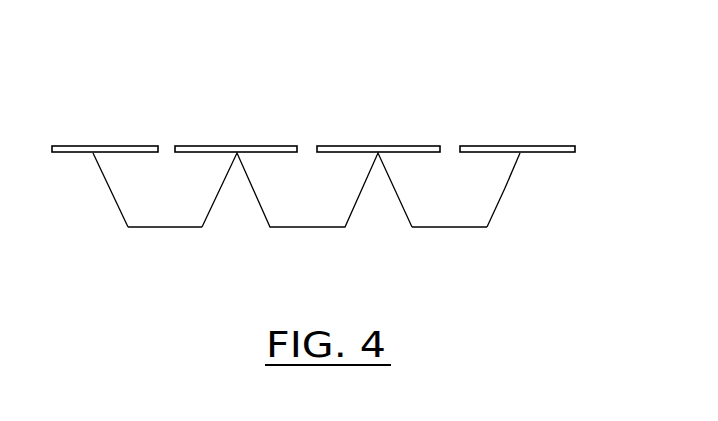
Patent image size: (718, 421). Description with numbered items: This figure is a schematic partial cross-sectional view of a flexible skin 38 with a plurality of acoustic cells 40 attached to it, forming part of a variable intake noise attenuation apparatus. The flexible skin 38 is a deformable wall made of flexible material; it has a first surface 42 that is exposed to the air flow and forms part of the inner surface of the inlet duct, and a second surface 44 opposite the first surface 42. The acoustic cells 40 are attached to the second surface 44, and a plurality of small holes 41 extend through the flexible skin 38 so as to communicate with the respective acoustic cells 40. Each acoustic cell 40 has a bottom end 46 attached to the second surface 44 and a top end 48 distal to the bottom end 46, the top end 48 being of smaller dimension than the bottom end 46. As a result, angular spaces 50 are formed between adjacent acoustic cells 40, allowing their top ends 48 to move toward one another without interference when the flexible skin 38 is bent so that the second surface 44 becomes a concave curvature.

The flexible skin 38 is at (549, 146).
The acoustic cells 40 is at (493, 213).
The small holes 41 is at (167, 146).
The first surface 42 is at (477, 146).
The second surface 44 is at (72, 154).
The bottom end 46 is at (523, 160).
The top end 48 is at (450, 227).
The angular spaces 50 is at (236, 205).